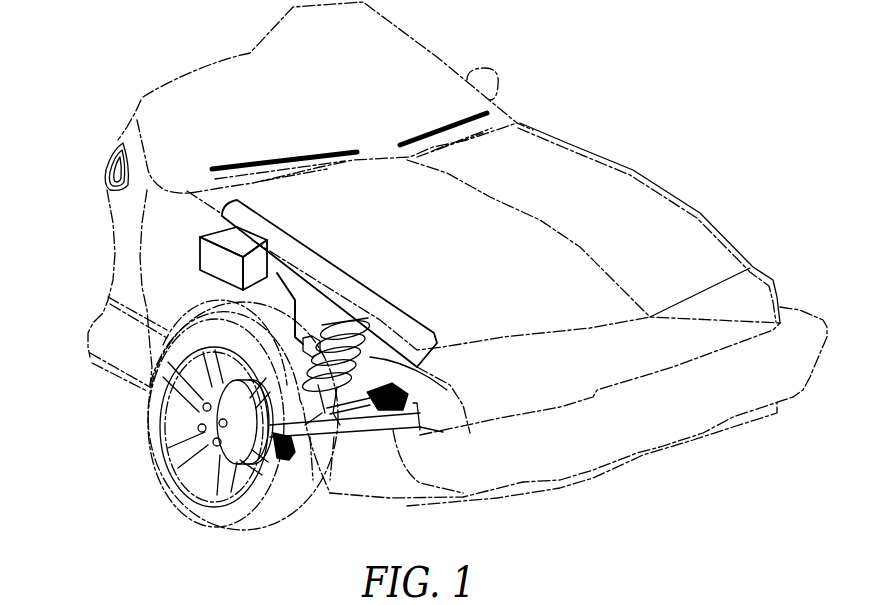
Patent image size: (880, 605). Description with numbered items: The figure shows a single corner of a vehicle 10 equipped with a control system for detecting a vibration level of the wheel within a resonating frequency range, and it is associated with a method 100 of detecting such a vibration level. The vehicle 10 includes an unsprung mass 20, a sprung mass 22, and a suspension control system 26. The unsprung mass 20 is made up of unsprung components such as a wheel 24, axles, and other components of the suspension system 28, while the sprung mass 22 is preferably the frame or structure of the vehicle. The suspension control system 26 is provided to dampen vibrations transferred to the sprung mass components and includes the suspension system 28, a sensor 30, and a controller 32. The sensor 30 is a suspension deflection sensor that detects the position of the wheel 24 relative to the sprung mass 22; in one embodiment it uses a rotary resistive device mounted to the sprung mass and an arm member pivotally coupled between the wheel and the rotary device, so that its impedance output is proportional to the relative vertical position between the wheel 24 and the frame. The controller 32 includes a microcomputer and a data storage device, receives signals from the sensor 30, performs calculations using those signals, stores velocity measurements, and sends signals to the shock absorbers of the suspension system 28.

The vehicle 10 is at (133, 70).
The unsprung mass 20 is at (110, 426).
The sprung mass 22 is at (652, 175).
The wheel 24 is at (146, 441).
The suspension control system 26 is at (341, 315).
The suspension system 28 is at (372, 360).
The sensor 30 is at (288, 342).
The controller 32 is at (259, 279).
The method 100 is at (52, 604).